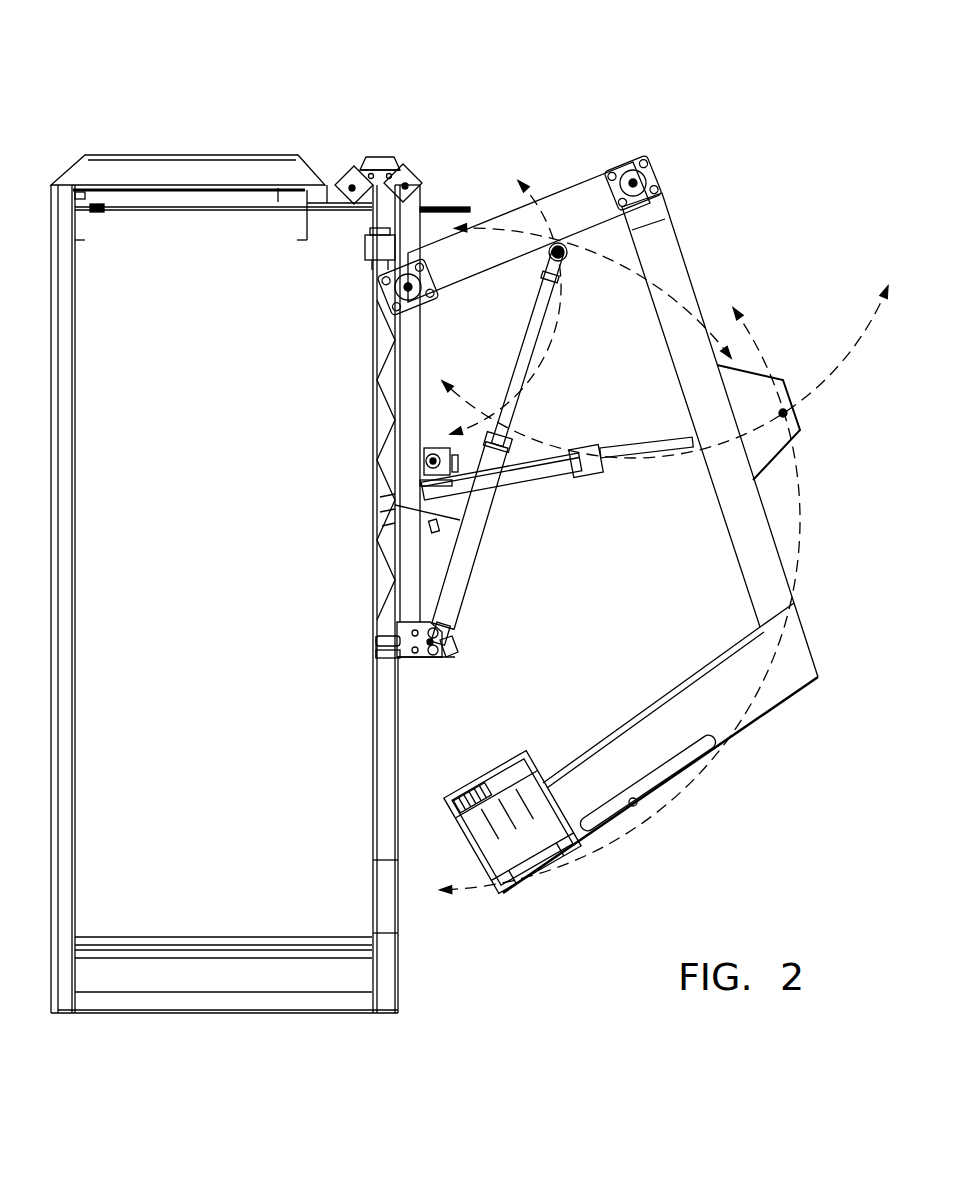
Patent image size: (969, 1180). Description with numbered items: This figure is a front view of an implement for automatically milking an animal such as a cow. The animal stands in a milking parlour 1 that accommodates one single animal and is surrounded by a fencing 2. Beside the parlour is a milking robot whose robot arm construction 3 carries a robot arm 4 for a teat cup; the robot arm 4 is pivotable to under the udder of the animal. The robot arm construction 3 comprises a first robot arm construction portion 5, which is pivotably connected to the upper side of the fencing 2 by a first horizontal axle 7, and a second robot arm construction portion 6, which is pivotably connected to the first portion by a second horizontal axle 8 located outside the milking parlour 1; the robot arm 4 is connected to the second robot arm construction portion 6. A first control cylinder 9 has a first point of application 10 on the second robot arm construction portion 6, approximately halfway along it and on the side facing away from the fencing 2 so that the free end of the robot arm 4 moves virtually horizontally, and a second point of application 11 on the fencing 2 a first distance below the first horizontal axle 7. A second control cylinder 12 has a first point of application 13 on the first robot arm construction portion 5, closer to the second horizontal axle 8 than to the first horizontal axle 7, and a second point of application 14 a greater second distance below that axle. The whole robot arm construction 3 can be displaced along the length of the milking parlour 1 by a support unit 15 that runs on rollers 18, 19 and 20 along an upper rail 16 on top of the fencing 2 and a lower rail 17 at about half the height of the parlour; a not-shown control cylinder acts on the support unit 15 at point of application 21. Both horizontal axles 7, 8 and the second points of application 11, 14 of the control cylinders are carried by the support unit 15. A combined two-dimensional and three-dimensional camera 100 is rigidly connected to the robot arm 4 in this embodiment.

The milking parlour 1 is at (128, 617).
The fencing 2 is at (378, 790).
The robot arm construction 3 is at (716, 240).
The robot arm 4 is at (750, 717).
The first robot arm construction portion 5 is at (521, 228).
The second robot arm construction portion 6 is at (760, 562).
The first horizontal axle 7 is at (400, 290).
The second horizontal axle 8 is at (655, 170).
The first control cylinder 9 is at (572, 468).
The first point of application 10 is at (784, 411).
The second point of application 11 is at (388, 522).
The second control cylinder 12 is at (453, 572).
The first point of application 13 is at (566, 257).
The second point of application 14 is at (430, 644).
The support unit 15 is at (375, 128).
The rail 16 is at (382, 238).
The rail 17 is at (380, 636).
The roller 18 is at (350, 170).
The roller 19 is at (400, 165).
The roller 20 is at (380, 652).
The point of application 21 is at (422, 450).
The 2D/3D camera 100 is at (503, 752).